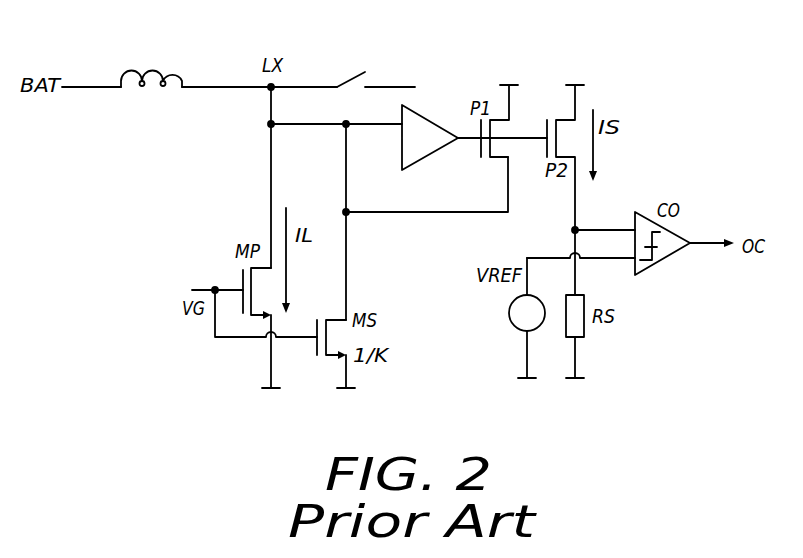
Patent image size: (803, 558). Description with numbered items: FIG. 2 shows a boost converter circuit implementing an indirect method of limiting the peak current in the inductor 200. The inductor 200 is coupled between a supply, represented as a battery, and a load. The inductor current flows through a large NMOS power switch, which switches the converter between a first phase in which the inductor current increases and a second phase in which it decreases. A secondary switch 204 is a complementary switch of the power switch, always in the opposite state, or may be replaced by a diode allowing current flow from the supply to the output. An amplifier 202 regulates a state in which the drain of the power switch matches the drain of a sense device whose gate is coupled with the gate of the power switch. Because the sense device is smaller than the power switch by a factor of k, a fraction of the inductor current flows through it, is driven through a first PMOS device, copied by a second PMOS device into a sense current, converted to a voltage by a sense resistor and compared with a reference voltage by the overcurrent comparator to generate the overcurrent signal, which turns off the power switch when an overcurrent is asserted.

The inductor 200 is at (150, 66).
The amplifier 202 is at (432, 120).
The secondary switch 204 is at (347, 73).